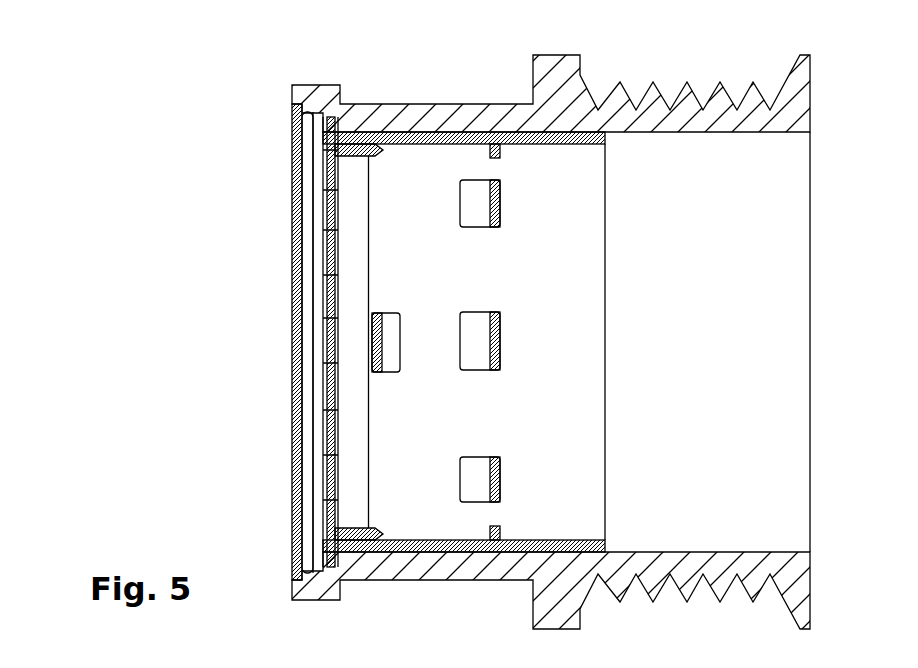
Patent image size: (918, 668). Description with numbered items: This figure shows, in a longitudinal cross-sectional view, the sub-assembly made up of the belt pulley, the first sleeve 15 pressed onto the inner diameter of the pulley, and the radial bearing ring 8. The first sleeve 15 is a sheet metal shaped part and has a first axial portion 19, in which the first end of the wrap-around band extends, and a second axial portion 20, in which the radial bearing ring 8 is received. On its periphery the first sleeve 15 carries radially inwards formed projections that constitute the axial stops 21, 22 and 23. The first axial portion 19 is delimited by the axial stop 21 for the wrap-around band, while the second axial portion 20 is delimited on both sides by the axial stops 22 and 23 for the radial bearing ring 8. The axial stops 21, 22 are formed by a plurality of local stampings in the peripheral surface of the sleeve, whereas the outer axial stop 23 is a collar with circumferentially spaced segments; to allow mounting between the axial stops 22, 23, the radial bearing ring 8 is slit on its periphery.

The radial bearing ring 8 is at (352, 418).
The first sleeve 15 is at (420, 135).
The first axial portion 19 is at (585, 88).
The second axial portion 20 is at (352, 130).
The axial stop 21 is at (500, 333).
The axial stop 22 is at (372, 340).
The axial stop 23 is at (342, 266).